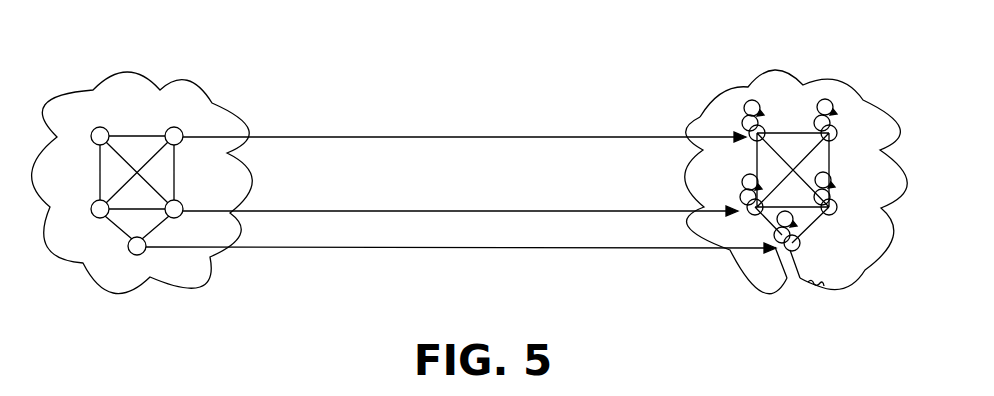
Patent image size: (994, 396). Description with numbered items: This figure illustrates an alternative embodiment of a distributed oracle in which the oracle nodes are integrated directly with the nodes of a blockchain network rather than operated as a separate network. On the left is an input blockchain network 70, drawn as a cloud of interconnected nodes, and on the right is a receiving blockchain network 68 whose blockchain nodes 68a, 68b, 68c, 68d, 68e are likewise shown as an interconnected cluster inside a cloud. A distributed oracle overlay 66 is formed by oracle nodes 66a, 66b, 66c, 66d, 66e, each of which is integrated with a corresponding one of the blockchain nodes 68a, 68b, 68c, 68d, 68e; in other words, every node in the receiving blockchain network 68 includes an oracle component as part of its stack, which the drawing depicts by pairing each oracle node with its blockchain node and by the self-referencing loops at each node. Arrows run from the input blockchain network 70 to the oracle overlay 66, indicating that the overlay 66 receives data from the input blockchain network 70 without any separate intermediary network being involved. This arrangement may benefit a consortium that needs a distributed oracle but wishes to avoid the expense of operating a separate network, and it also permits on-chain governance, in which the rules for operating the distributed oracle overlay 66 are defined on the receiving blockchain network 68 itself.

The input blockchain network 70 is at (131, 52).
The distributed oracle overlay 66 is at (748, 66).
The oracle node 66a is at (785, 290).
The oracle node 66b is at (703, 217).
The oracle node 66c is at (708, 124).
The oracle node 66d is at (813, 85).
The oracle node 66e is at (882, 152).
The receiving blockchain network 68 is at (865, 270).
The blockchain node 68a is at (825, 290).
The blockchain node 68b is at (733, 250).
The blockchain node 68c is at (712, 138).
The blockchain node 68d is at (868, 103).
The blockchain node 68e is at (878, 212).